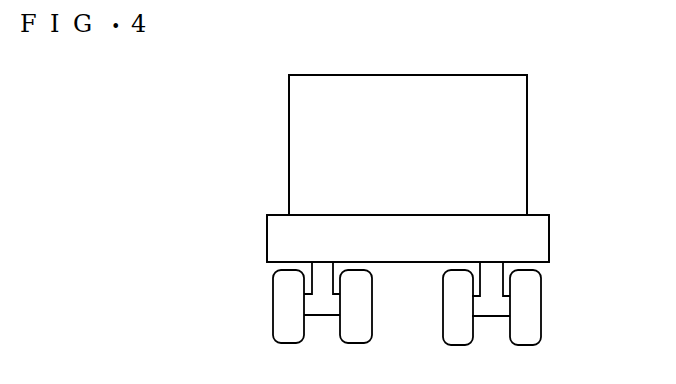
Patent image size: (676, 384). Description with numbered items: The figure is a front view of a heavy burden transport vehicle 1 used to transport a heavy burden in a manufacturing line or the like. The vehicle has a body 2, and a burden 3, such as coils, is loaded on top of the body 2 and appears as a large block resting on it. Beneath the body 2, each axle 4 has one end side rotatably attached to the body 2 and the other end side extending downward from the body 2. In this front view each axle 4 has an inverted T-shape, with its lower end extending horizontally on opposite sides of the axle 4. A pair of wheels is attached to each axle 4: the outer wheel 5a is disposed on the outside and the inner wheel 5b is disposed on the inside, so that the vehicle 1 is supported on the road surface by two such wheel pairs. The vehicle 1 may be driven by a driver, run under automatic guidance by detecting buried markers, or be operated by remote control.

The heavy burden transport vehicle 1 is at (274, 122).
The body 2 is at (549, 237).
The burden 3 is at (527, 145).
The axle 4 is at (312, 262).
The outer wheel 5a is at (273, 316).
The inner wheel 5b is at (372, 325).